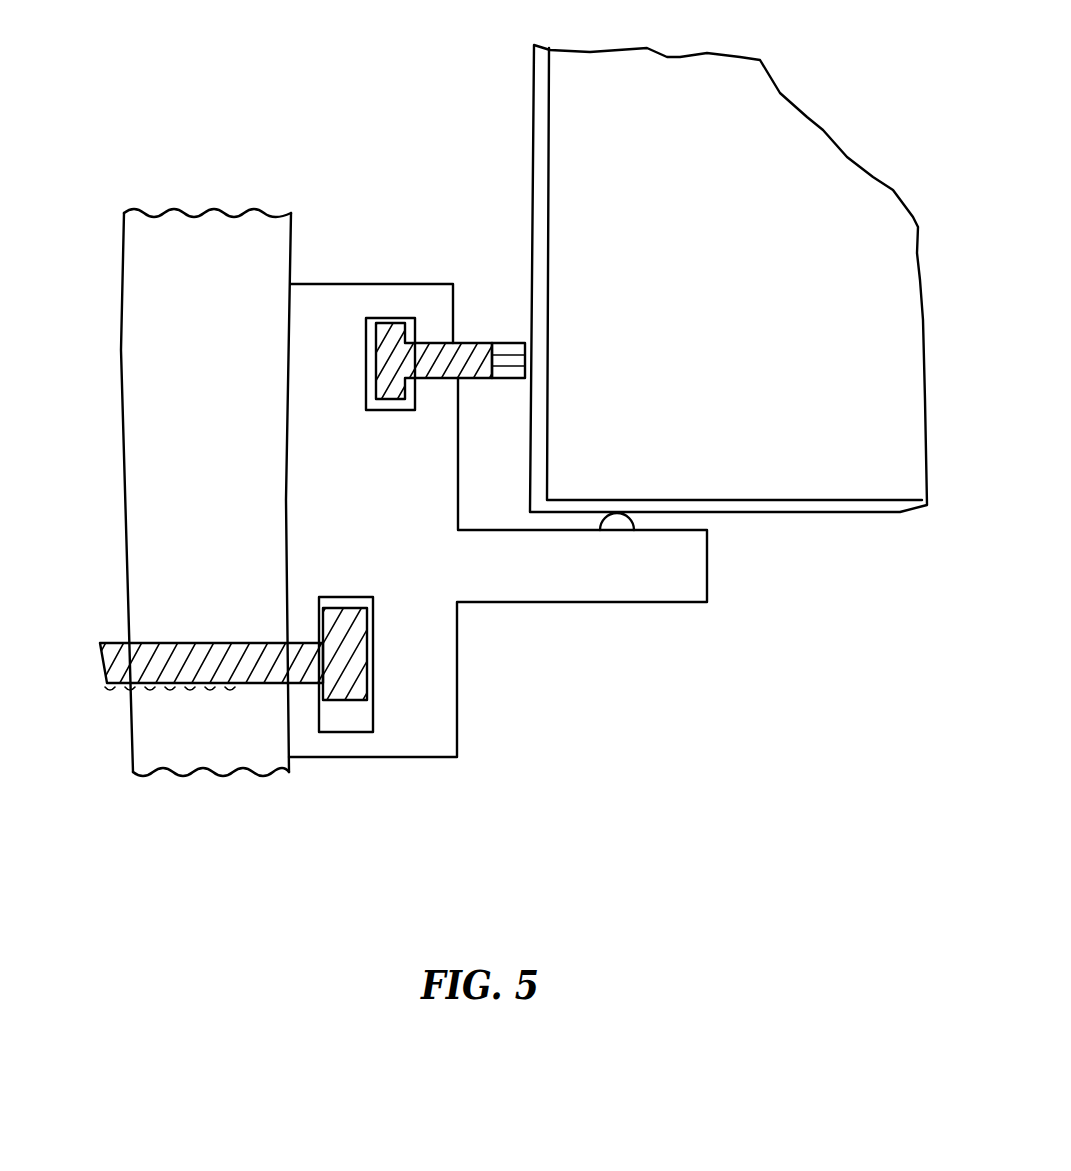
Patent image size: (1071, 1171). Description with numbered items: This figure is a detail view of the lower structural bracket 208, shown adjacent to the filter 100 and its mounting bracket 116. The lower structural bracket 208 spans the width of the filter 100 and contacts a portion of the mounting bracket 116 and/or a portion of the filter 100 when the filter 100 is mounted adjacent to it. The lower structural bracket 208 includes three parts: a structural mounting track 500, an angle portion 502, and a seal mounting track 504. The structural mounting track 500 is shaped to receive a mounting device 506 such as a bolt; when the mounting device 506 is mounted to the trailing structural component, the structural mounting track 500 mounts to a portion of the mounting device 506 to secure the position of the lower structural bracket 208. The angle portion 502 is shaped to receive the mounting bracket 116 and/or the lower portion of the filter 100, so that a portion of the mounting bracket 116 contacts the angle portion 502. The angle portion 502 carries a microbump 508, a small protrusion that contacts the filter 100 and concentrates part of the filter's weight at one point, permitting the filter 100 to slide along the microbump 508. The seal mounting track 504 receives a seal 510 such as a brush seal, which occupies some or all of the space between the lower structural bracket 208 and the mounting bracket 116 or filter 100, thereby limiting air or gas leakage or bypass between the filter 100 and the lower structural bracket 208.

The filter 100 is at (725, 237).
The mounting bracket 116 is at (538, 87).
The lower structural bracket 208 is at (152, 509).
The structural mounting track 500 is at (340, 730).
The angle portion 502 is at (507, 532).
The seal mounting track 504 is at (379, 320).
The mounting device 506 is at (353, 665).
The microbump 508 is at (615, 522).
The seal 510 is at (390, 340).